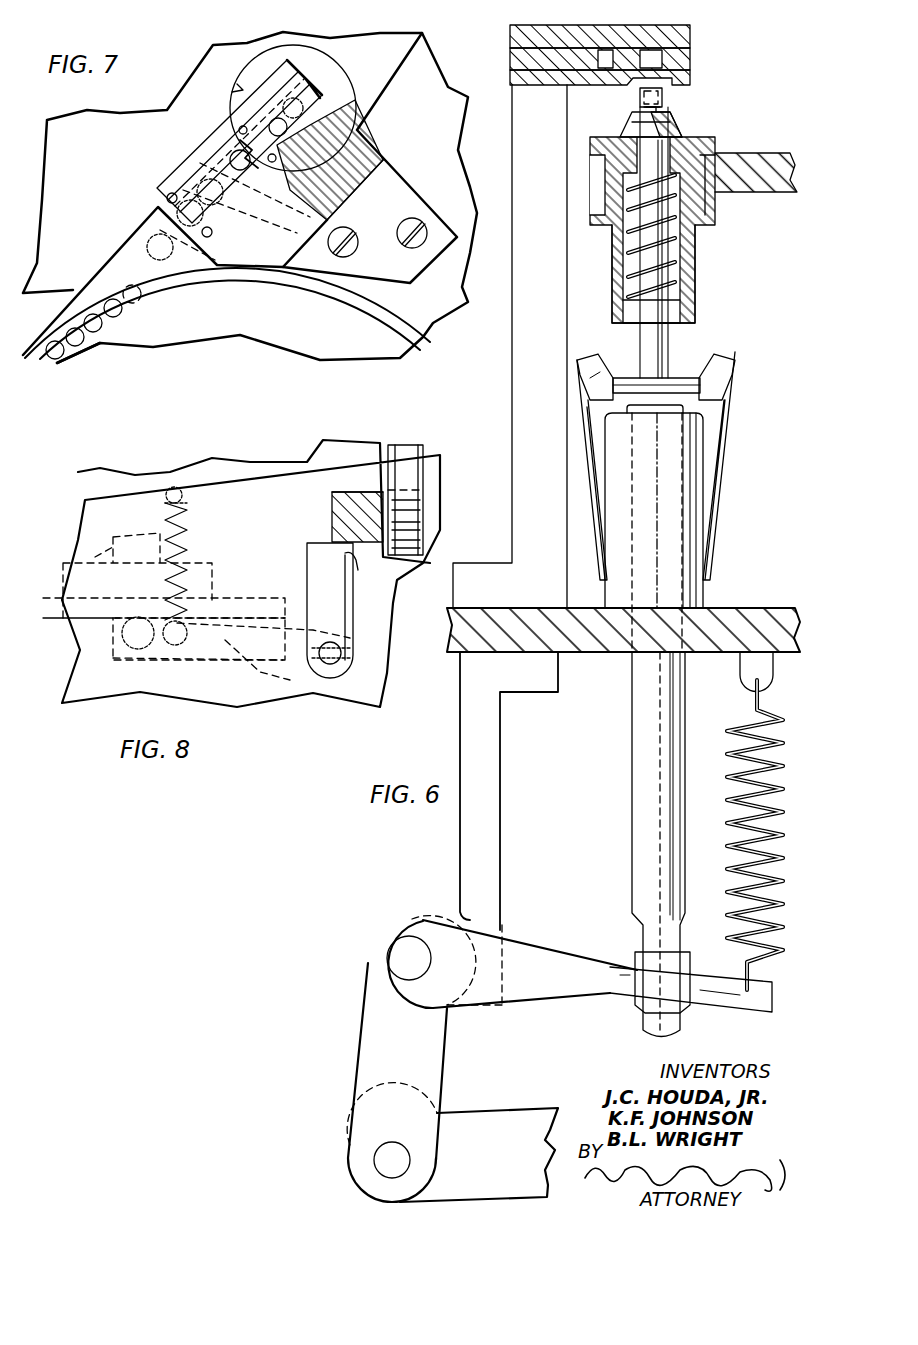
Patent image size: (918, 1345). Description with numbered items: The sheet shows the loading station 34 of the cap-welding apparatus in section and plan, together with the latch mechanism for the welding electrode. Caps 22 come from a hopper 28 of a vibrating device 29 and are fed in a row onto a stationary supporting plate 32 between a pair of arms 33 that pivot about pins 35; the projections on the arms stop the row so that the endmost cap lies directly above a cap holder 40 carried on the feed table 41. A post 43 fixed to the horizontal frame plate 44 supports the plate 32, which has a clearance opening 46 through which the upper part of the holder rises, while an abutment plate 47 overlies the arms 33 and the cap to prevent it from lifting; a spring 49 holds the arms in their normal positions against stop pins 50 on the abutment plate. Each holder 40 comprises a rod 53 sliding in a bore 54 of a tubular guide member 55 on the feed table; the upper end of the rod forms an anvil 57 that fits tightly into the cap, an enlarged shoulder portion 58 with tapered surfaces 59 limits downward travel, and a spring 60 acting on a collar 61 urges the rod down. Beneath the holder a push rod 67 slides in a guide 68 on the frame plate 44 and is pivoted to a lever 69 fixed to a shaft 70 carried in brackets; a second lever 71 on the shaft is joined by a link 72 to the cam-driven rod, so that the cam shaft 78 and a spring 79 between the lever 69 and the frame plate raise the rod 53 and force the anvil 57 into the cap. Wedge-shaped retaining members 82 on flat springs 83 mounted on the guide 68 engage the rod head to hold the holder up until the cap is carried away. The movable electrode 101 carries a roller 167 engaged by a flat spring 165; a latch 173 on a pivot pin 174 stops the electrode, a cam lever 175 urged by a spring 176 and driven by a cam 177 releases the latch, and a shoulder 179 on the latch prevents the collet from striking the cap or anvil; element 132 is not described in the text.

In FIG. 6, the cap 22 is at (645, 92).
In FIG. 7, the cap 22 is at (128, 245).
In FIG. 7, the hopper 28 is at (283, 345).
In FIG. 7, the vibrating device 29 is at (387, 315).
In FIG. 6, the stationary supporting plate 32 is at (692, 80).
In FIG. 7, the stationary supporting plate 32 is at (350, 92).
In FIG. 6, the arms 33 is at (510, 38).
In FIG. 7, the arms 33 is at (225, 135).
In FIG. 7, the loading station 34 is at (243, 90).
In FIG. 7, the pins 35 is at (322, 83).
In FIG. 7, the cap holder 40 is at (284, 105).
In FIG. 6, the feed table 41 is at (770, 160).
In FIG. 7, the feed table 41 is at (66, 118).
In FIG. 6, the post 43 is at (520, 366).
In FIG. 6, the horizontal frame plate 44 is at (733, 622).
In FIG. 6, the clearance opening 46 is at (663, 95).
In FIG. 6, the abutment plate 47 is at (692, 30).
In FIG. 7, the spring 49 is at (200, 140).
In FIG. 7, the stop pins 50 is at (258, 103).
In FIG. 6, the rod 53 is at (672, 338).
In FIG. 6, the bore 54 is at (592, 140).
In FIG. 6, the tubular guide member 55 is at (620, 265).
In FIG. 6, the anvil 57 is at (660, 105).
In FIG. 6, the enlarged shoulder portion 58 is at (680, 125).
In FIG. 6, the tapered surfaces 59 is at (628, 122).
In FIG. 6, the spring 60 is at (700, 240).
In FIG. 6, the collar 61 is at (640, 312).
In FIG. 6, the push rod 67 is at (642, 735).
In FIG. 6, the guide 68 is at (692, 505).
In FIG. 6, the lever 69 is at (548, 955).
In FIG. 6, the shaft 70 is at (405, 953).
In FIG. 6, the lever 71 is at (460, 850).
In FIG. 6, the link 72 is at (468, 1118).
In FIG. 6, the spring 79 is at (727, 800).
In FIG. 6, the wedge-shaped retaining members 82 is at (590, 372).
In FIG. 6, the flat springs 83 is at (584, 430).
In FIG. 8, the cam shaft 78 is at (95, 557).
In FIG. 8, the movable electrode 101 is at (333, 510).
In FIG. 8, the plate 132 is at (336, 490).
In FIG. 8, the flat spring 165 is at (402, 445).
In FIG. 8, the roller 167 is at (425, 510).
In FIG. 8, the latch 173 is at (312, 563).
In FIG. 8, the pivot pin 174 is at (325, 668).
In FIG. 8, the cam lever 175 is at (225, 670).
In FIG. 8, the spring 176 is at (210, 545).
In FIG. 8, the cam 177 is at (255, 612).
In FIG. 8, the shoulder 179 is at (350, 555).